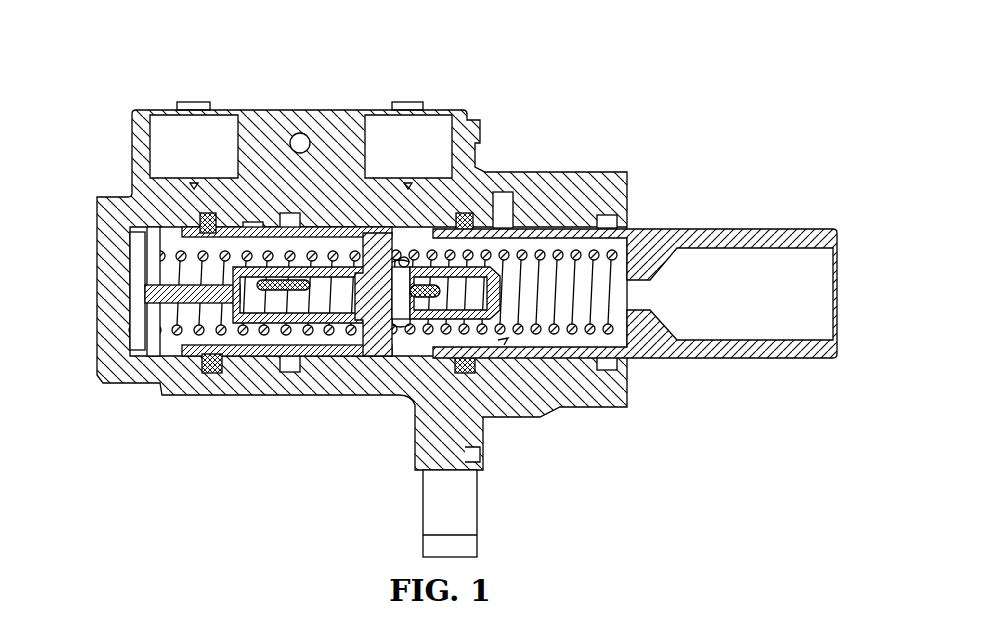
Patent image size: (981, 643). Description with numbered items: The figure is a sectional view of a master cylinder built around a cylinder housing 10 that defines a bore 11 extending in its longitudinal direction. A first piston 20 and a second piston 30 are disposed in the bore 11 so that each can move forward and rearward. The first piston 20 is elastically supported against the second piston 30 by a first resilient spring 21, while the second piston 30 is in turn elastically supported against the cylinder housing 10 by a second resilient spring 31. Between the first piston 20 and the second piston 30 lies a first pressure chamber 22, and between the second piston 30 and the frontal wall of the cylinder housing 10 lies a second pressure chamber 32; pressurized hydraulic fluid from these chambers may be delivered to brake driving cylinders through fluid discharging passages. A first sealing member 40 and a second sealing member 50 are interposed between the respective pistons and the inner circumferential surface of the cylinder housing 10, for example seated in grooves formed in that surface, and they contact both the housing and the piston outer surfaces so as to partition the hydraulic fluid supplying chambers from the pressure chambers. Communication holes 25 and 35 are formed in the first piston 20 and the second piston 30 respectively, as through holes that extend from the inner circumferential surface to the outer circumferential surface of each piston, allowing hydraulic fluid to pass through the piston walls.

The cylinder housing 10 is at (93, 188).
The bore 11 is at (425, 238).
The first piston 20 is at (664, 224).
The first resilient spring 21 is at (545, 340).
The first pressure chamber 22 is at (502, 342).
The communication holes 25 is at (465, 250).
The second piston 30 is at (348, 368).
The second resilient spring 31 is at (165, 335).
The second pressure chamber 32 is at (188, 342).
The communication holes 35 is at (178, 243).
The first sealing member 40 is at (458, 237).
The second sealing member 50 is at (195, 240).